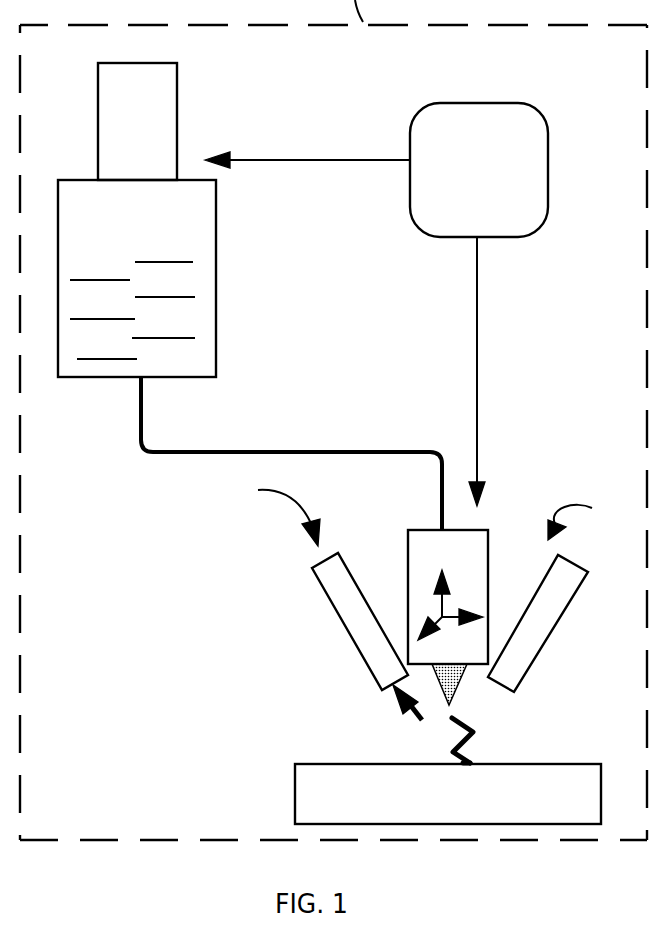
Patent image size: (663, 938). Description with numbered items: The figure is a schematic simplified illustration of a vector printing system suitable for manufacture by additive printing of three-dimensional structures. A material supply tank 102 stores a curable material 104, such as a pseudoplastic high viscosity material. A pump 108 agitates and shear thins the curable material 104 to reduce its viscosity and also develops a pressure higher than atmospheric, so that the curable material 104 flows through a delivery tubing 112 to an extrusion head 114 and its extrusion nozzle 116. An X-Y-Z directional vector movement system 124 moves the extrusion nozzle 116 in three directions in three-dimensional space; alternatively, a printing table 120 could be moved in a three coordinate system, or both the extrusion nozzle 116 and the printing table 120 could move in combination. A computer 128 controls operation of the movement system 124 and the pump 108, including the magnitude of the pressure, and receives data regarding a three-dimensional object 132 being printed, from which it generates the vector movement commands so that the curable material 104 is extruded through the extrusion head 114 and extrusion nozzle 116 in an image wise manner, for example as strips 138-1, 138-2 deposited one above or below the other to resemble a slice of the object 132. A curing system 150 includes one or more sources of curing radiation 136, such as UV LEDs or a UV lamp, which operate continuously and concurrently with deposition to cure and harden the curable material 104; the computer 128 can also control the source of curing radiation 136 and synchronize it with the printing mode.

The material supply tank 102 is at (217, 243).
The curable material 104 is at (175, 355).
The pump 108 is at (177, 128).
The delivery tubing 112 is at (187, 455).
The extrusion head 114 is at (460, 558).
The extrusion nozzle 116 is at (448, 708).
The printing table 120 is at (313, 795).
The X-Y-Z directional vector movement system 124 is at (442, 617).
The computer 128 is at (495, 182).
The three-dimensional object 132 is at (462, 757).
The source of curing radiation 136 is at (353, 648).
The strip 138-1 is at (467, 763).
The strip 138-2 is at (472, 758).
The curing system 150 is at (427, 511).